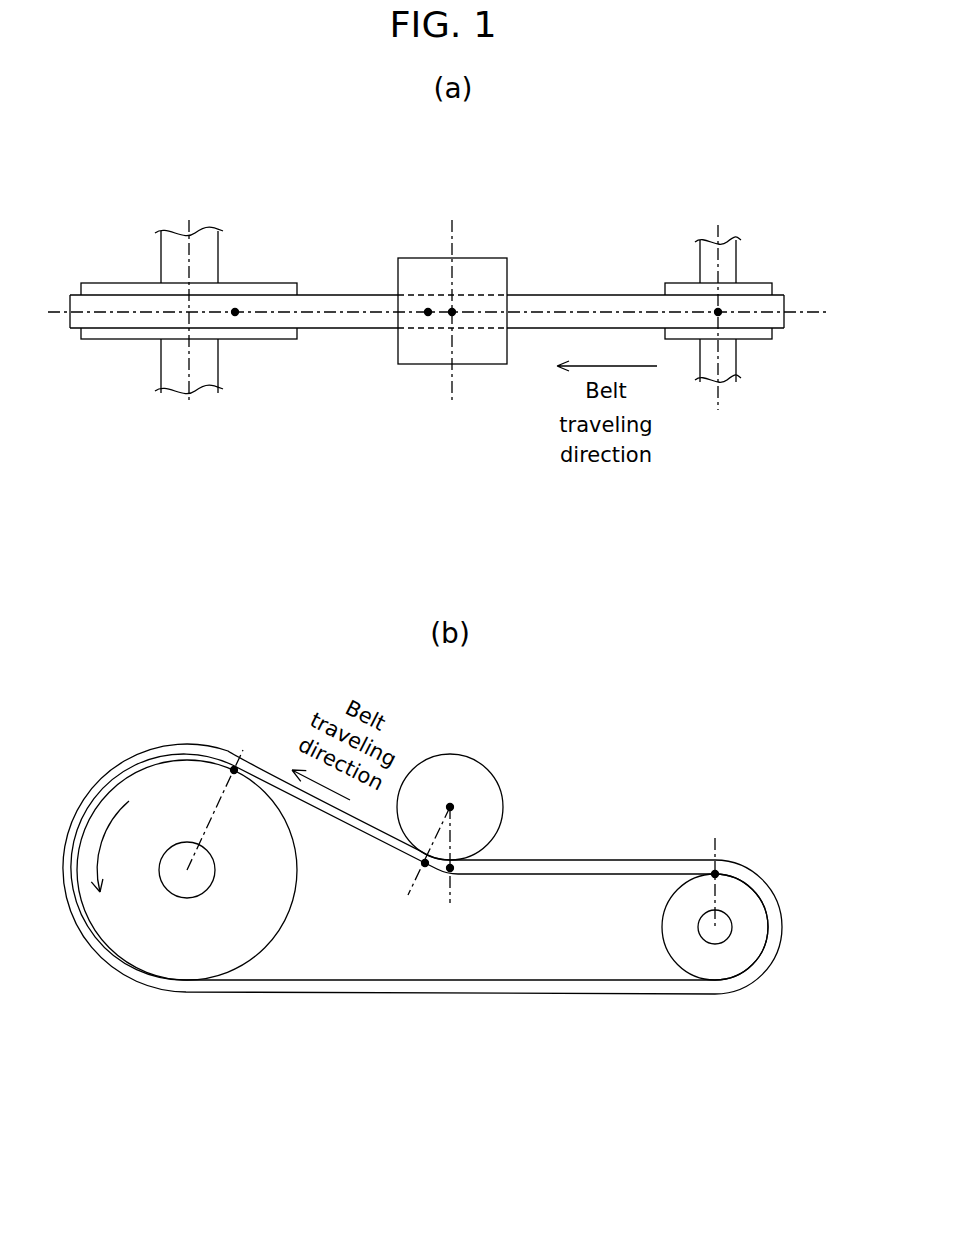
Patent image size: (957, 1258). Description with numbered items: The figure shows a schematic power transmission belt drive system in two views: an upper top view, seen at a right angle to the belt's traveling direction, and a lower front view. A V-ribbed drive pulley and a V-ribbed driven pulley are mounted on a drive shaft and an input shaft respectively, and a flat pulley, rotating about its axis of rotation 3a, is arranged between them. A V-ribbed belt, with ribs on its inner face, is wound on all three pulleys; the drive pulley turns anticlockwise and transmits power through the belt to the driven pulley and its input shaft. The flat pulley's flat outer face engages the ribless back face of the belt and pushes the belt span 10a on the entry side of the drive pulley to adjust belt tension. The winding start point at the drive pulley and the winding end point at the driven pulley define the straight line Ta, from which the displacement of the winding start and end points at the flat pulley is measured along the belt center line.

The straight line connecting winding start point d and winding end point a Ta is at (811, 308).
The axis of rotation 3a is at (450, 232).
The belt span 10a is at (565, 867).